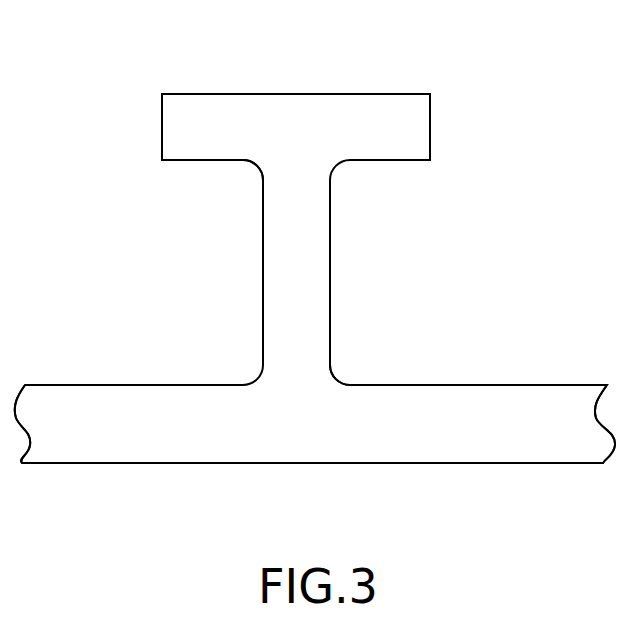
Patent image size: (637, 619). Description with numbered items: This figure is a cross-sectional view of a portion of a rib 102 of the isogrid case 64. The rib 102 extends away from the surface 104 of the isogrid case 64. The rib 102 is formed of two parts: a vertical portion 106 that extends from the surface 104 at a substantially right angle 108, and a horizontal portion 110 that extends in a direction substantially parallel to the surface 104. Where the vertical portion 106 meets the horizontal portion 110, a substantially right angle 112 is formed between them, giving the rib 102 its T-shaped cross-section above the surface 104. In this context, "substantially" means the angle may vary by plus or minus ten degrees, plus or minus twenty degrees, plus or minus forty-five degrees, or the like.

The isogrid case 64 is at (147, 385).
The rib 102 is at (348, 178).
The surface 104 is at (502, 385).
The vertical portion 106 is at (331, 266).
The right angle 108 is at (335, 355).
The horizontal portion 110 is at (303, 93).
The right angle 112 is at (259, 190).